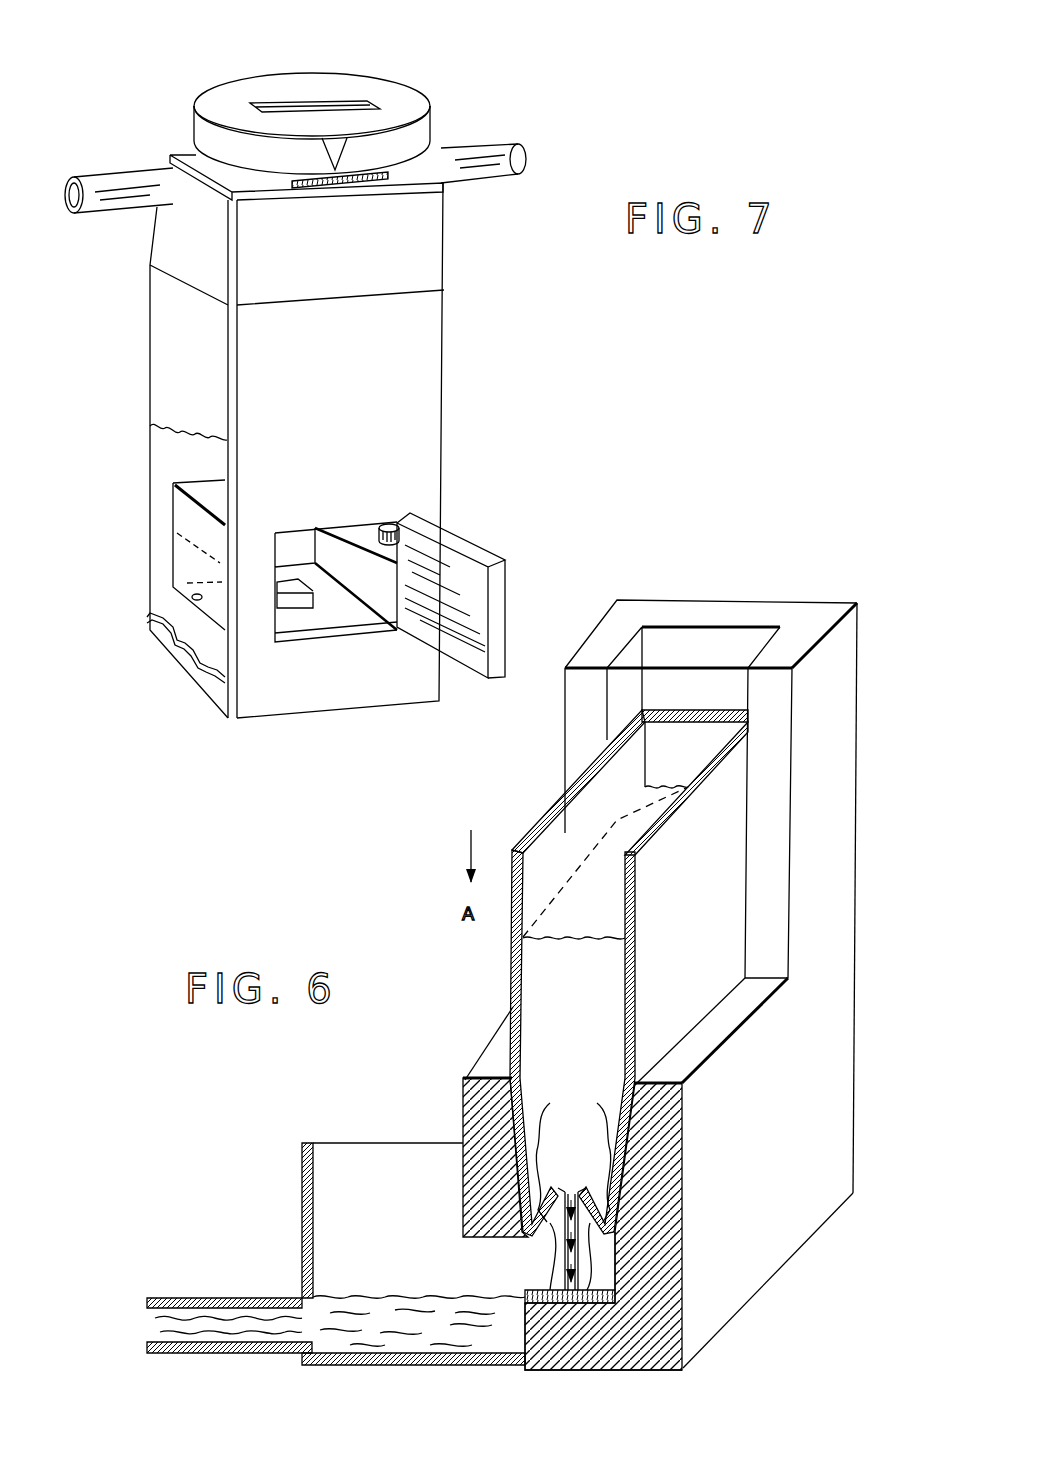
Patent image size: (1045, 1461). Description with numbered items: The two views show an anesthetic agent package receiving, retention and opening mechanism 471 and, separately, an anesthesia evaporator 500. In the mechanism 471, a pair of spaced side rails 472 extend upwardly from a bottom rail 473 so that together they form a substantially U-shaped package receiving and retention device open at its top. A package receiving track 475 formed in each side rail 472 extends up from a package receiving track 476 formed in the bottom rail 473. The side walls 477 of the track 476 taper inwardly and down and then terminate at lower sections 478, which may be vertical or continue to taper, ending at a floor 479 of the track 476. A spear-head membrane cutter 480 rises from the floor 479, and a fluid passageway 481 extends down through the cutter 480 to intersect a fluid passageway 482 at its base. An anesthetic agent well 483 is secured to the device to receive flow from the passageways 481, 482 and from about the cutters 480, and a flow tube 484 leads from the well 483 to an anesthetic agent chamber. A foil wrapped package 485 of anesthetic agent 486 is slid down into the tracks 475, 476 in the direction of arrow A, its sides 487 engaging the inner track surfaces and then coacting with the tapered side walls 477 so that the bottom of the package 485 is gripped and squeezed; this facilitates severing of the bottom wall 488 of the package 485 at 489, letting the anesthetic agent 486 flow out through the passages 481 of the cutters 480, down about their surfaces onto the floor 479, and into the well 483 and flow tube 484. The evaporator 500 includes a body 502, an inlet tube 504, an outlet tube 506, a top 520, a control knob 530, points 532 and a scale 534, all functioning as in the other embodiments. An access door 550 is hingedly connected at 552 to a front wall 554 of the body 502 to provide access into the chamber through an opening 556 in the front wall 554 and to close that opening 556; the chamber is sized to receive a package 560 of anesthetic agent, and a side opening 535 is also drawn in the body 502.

In FIG. 7, the anesthesia evaporator 500 is at (480, 76).
In FIG. 7, the body 502 is at (417, 277).
In FIG. 7, the inlet tube 504 is at (132, 183).
In FIG. 7, the outlet tube 506 is at (490, 163).
In FIG. 7, the top 520 is at (193, 153).
In FIG. 7, the control knob 530 is at (313, 120).
In FIG. 7, the points 532 is at (335, 170).
In FIG. 7, the scale 534 is at (330, 188).
In FIG. 7, the side opening 535 is at (176, 503).
In FIG. 7, the access door 550 is at (470, 590).
In FIG. 7, the hinge connection 552 is at (388, 522).
In FIG. 7, the front wall 554 is at (388, 446).
In FIG. 7, the opening 556 is at (343, 612).
In FIG. 7, the package of anesthetic agent 560 is at (287, 600).
In FIG. 6, the anesthetic agent package receiving, retention and opening mechanism 471 is at (674, 656).
In FIG. 6, the side rail 472 is at (817, 687).
In FIG. 6, the bottom rail 473 is at (807, 1127).
In FIG. 6, the package receiving track 475 is at (737, 647).
In FIG. 6, the package receiving track 476 is at (722, 1015).
In FIG. 6, the side walls 477 is at (500, 1132).
In FIG. 6, the lower sections 478 is at (633, 1263).
In FIG. 6, the floor 479 is at (603, 1312).
In FIG. 6, the spear-head membrane cutter 480 is at (557, 1230).
In FIG. 6, the fluid passageway 481 is at (558, 1267).
In FIG. 6, the fluid passageway 482 is at (569, 1296).
In FIG. 6, the anesthetic agent well 483 is at (340, 1128).
In FIG. 6, the flow tube 484 is at (227, 1280).
In FIG. 6, the foil wrapped package 485 is at (717, 822).
In FIG. 6, the anesthetic agent 486 is at (597, 993).
In FIG. 6, the sides 487 is at (500, 980).
In FIG. 6, the bottom wall 488 is at (573, 1190).
In FIG. 6, the severing location 489 is at (571, 1168).